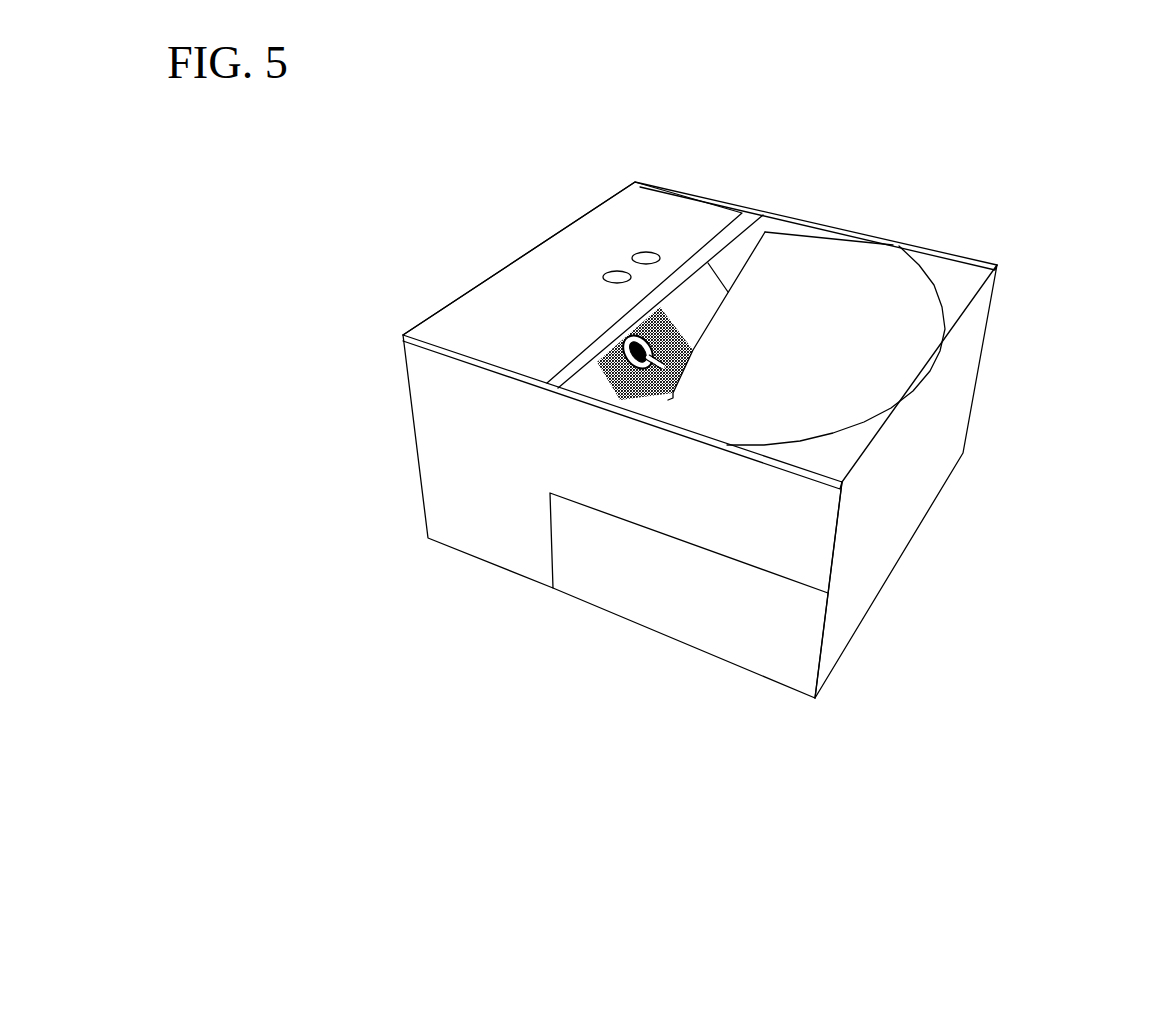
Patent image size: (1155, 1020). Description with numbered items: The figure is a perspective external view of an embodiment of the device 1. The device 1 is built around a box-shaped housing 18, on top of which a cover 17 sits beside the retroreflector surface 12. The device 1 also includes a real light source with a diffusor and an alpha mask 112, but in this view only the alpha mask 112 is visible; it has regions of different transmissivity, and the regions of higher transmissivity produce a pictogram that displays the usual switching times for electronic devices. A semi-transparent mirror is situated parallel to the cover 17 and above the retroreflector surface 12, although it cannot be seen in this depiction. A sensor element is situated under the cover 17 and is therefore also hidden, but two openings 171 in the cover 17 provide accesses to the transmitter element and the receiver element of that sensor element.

The device 1 is at (965, 240).
The retroreflector surface 12 is at (806, 290).
The cover 17 is at (505, 300).
The openings 171 is at (636, 250).
The alpha mask 112 is at (597, 375).
The box-shaped housing 18 is at (505, 553).